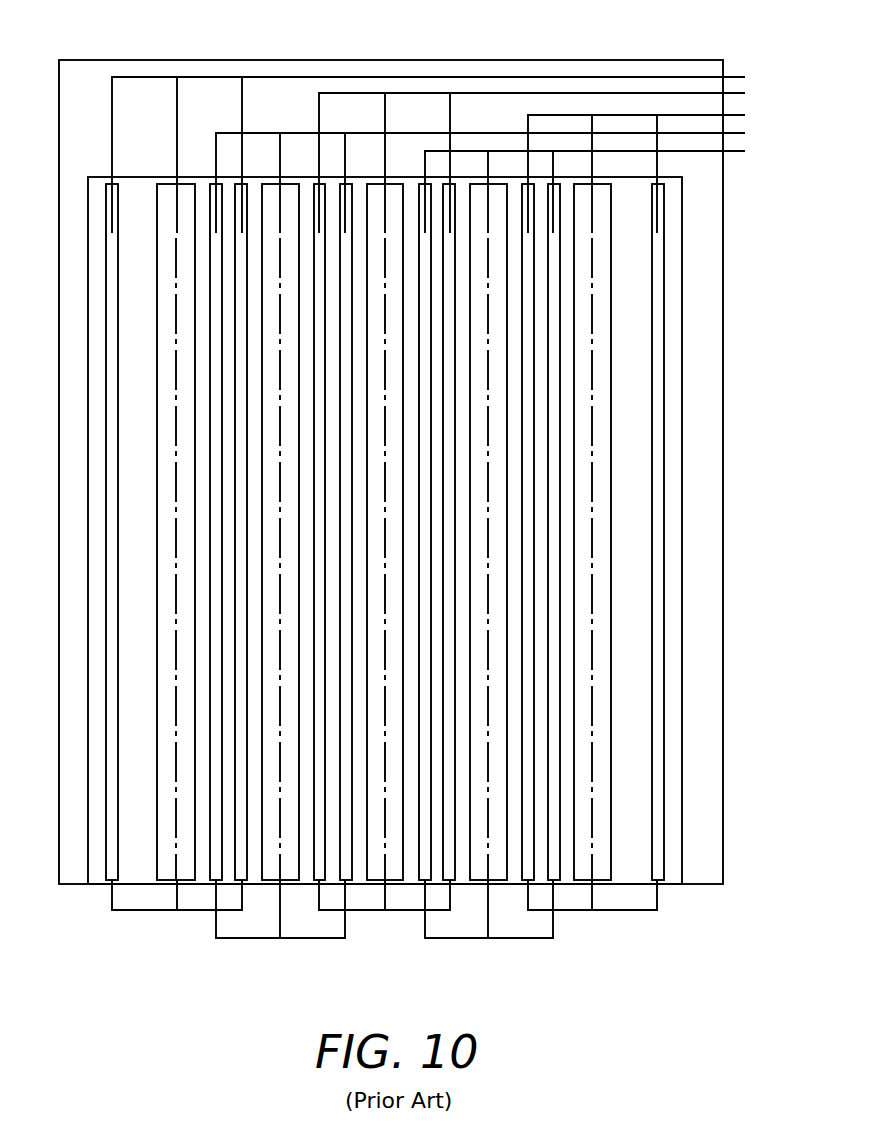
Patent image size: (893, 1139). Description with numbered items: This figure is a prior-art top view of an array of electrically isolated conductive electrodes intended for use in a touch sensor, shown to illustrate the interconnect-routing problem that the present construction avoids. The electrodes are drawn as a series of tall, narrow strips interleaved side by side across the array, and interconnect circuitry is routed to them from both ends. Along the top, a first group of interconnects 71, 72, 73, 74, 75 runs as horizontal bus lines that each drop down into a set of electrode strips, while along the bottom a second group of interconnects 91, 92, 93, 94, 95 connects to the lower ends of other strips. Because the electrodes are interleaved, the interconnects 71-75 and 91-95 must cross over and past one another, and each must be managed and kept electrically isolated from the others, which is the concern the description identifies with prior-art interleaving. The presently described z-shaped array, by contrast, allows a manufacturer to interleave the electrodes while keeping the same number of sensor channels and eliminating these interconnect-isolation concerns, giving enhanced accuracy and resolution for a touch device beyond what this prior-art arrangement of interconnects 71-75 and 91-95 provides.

The interconnect 71 is at (111, 86).
The interconnect 72 is at (260, 132).
The interconnect 73 is at (365, 92).
The interconnect 74 is at (463, 150).
The interconnect 75 is at (617, 113).
The interconnect 91 is at (132, 912).
The interconnect 92 is at (330, 940).
The interconnect 93 is at (405, 912).
The interconnect 94 is at (460, 940).
The interconnect 95 is at (627, 912).